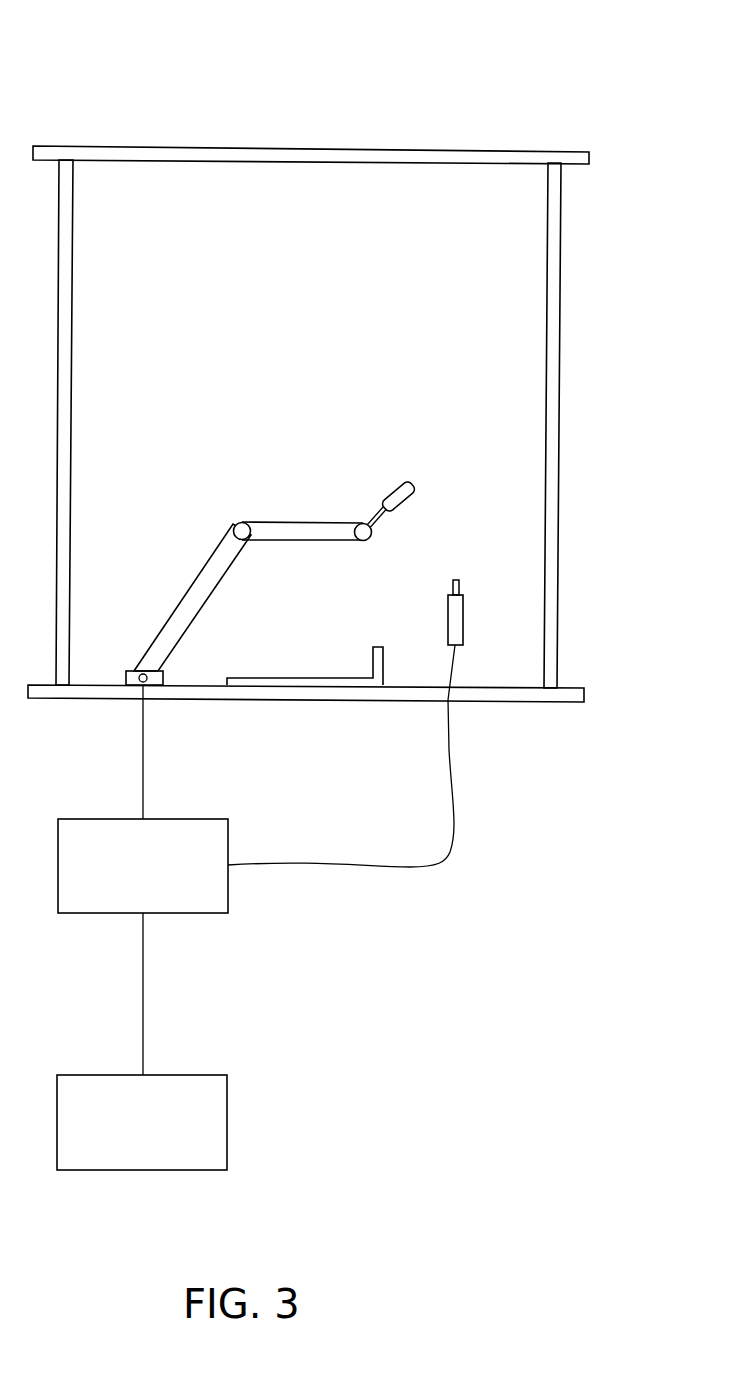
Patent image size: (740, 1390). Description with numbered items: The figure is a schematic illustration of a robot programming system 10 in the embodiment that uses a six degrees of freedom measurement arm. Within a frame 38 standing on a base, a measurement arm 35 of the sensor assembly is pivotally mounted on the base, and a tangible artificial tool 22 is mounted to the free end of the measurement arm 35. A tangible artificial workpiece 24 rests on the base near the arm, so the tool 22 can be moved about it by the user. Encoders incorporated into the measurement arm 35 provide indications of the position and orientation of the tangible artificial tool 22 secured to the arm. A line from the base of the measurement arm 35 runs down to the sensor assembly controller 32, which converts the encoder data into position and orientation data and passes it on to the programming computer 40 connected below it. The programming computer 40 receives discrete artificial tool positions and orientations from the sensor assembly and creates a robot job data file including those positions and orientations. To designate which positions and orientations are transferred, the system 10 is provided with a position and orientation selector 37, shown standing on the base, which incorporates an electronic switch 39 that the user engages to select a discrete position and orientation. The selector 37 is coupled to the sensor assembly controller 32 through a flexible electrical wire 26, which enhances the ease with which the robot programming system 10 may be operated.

The robot programming system 10 is at (528, 84).
The tangible artificial tool 22 is at (404, 480).
The tangible artificial workpiece 24 is at (387, 657).
The flexible electrical wire 26 is at (448, 758).
The sensor assembly controller 32 is at (228, 897).
The measurement arm 35 is at (202, 568).
The position and orientation selector 37 is at (447, 598).
The frame 38 is at (73, 355).
The electronic switch 39 is at (457, 578).
The programming computer 40 is at (228, 1118).